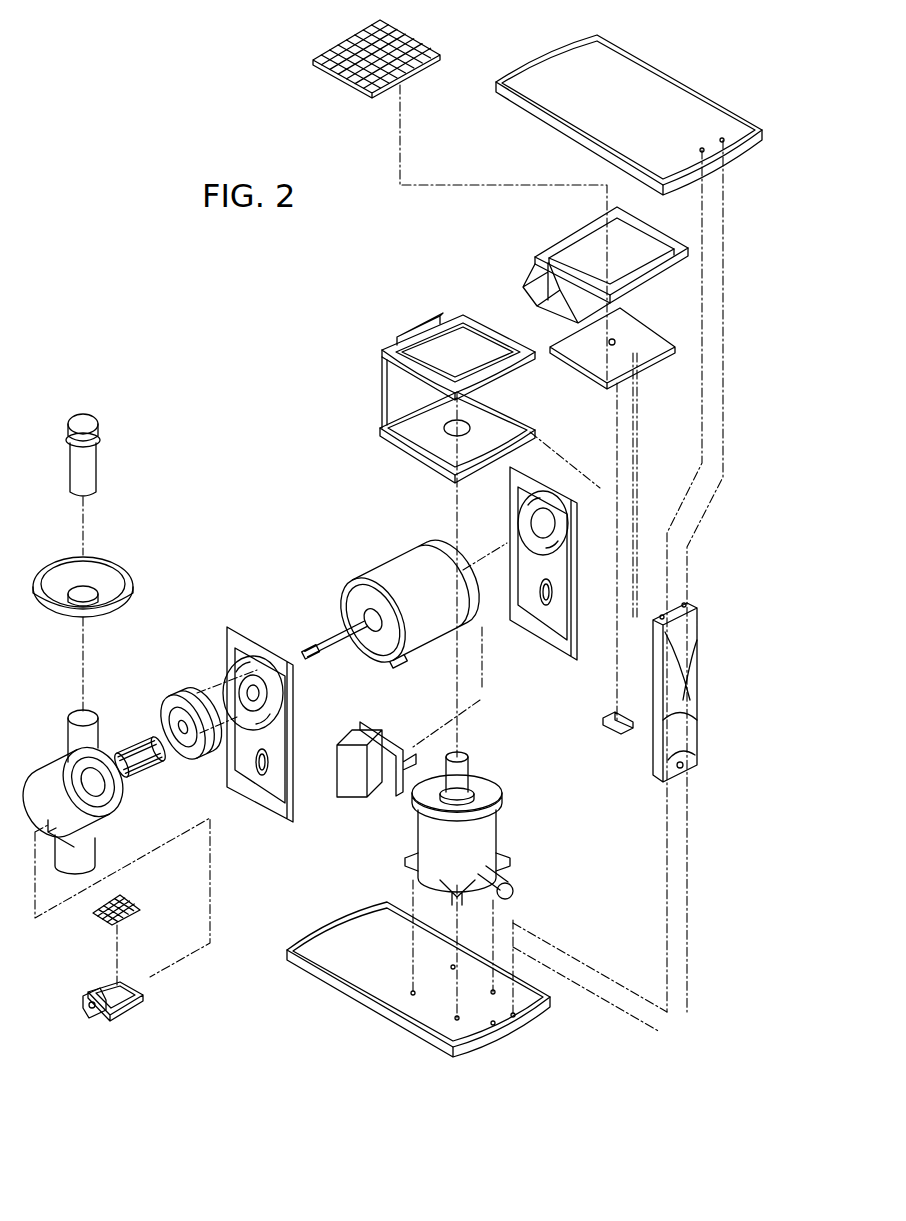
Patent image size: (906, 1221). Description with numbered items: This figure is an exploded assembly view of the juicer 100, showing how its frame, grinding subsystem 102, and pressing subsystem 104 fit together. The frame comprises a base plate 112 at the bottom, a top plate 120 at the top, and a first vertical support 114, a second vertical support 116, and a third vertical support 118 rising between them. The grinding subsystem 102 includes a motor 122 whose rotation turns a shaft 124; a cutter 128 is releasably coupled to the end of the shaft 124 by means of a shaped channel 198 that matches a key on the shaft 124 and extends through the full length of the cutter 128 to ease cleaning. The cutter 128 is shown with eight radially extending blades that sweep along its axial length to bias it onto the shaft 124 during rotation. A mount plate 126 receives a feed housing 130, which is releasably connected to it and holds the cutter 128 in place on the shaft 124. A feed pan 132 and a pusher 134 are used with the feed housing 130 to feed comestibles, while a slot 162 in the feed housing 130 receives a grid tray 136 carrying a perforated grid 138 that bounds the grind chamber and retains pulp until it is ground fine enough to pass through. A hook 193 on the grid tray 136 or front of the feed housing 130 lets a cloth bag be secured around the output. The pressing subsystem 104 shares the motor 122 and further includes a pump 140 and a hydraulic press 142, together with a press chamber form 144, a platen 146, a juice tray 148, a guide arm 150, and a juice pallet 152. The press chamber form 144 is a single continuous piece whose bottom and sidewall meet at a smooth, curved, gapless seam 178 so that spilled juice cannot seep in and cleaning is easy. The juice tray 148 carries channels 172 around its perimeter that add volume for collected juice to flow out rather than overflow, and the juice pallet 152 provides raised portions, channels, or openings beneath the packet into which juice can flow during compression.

The juicer 100 is at (232, 340).
The grinding subsystem 102 is at (188, 524).
The pressing subsystem 104 is at (390, 325).
The base plate 112 is at (545, 1017).
The first vertical support 114 is at (265, 792).
The second vertical support 116 is at (548, 630).
The third vertical support 118 is at (655, 752).
The top plate 120 is at (648, 62).
The motor 122 is at (405, 560).
The shaft 124 is at (335, 643).
The mount plate 126 is at (180, 697).
The cutter 128 is at (145, 737).
The feed housing 130 is at (95, 812).
The feed pan 132 is at (135, 585).
The pusher 134 is at (98, 470).
The grid tray 136 is at (140, 1005).
The grid 138 is at (127, 910).
The pump 140 is at (356, 798).
The press 142 is at (500, 840).
The press chamber form 144 is at (406, 455).
The platen 146 is at (590, 375).
The juice tray 148 is at (580, 228).
The guide arm 150 is at (600, 725).
The juice pallet 152 is at (345, 80).
The slot 162 is at (72, 838).
The channels 172 is at (548, 244).
The seam 178 is at (382, 420).
The hook 193 is at (95, 1008).
The shaped channel 198 is at (135, 772).